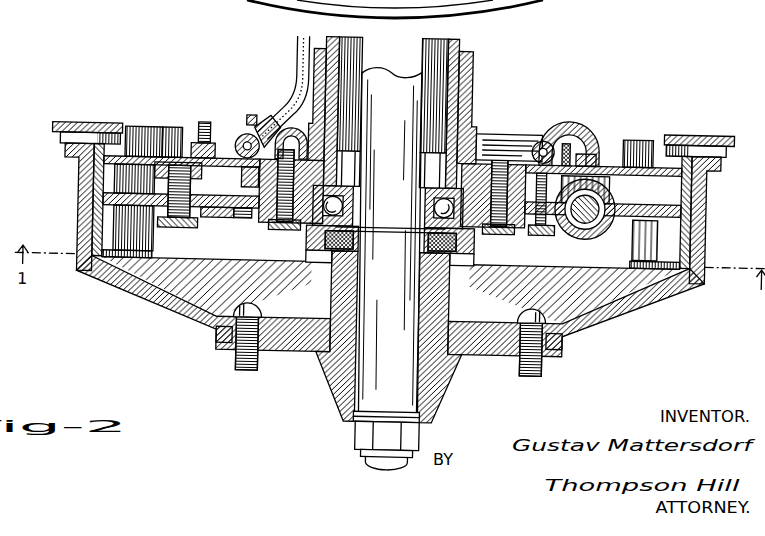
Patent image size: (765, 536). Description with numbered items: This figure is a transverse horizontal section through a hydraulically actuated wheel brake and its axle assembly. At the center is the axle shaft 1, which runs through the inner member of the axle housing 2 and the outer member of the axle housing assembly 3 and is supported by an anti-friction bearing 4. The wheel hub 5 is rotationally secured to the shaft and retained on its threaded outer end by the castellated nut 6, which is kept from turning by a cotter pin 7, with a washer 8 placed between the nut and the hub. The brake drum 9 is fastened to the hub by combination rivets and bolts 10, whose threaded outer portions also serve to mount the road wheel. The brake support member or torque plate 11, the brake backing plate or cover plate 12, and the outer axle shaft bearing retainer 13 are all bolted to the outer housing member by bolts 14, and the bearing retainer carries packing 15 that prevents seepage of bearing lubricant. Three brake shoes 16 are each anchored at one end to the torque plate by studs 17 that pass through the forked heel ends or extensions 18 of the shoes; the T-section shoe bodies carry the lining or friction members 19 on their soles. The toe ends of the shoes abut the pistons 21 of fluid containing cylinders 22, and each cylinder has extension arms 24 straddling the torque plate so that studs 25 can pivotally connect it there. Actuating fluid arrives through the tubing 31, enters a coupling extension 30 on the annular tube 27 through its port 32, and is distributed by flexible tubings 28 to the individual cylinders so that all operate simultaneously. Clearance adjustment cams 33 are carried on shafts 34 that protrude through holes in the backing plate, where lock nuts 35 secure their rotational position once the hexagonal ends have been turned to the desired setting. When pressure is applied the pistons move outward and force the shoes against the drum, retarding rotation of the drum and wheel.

The axle shaft 1 is at (376, 75).
The inner member of the axle housing 2 is at (455, 43).
The outer member of the axle housing assembly 3 is at (469, 76).
The anti-friction bearing 4 is at (476, 156).
The wheel hub 5 is at (324, 356).
The castellated nut 6 is at (369, 446).
The cotter pin 7 is at (383, 465).
The washer 8 is at (356, 424).
The brake drum 9 is at (176, 315).
The combination rivets and bolts 10 is at (244, 365).
The brake support member or torque plate 11 is at (218, 171).
The brake backing plate or cover plate 12 is at (74, 128).
The outer axle shaft bearing retainer 13 is at (323, 249).
The bolts 14 is at (284, 233).
The packing 15 is at (322, 264).
The brake shoes 16 is at (109, 208).
The studs 17 is at (167, 131).
The forked heel ends or extensions 18 is at (137, 130).
The lining or friction members 19 is at (78, 187).
The pistons 21 is at (606, 189).
The fluid containing cylinders 22 is at (613, 201).
The extension arms 24 is at (221, 226).
The studs 25 is at (240, 222).
The annular tube 27 is at (241, 138).
The flexible tubings 28 is at (292, 128).
The coupling extension 30 is at (248, 117).
The tubing 31 is at (292, 54).
The port 32 is at (264, 120).
The clearance adjustment cams 33 is at (178, 234).
The shafts 34 is at (200, 126).
The lock nuts 35 is at (207, 153).